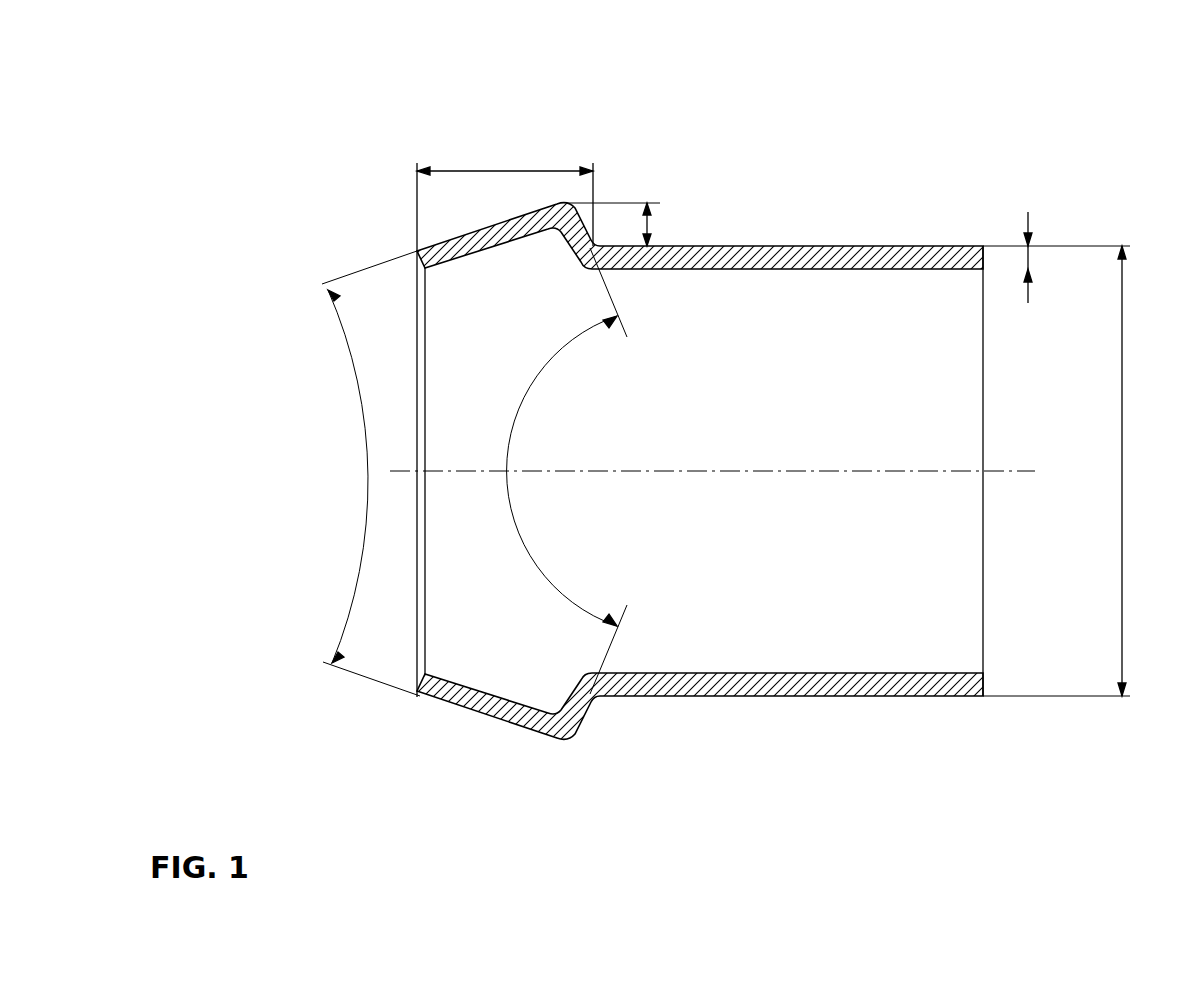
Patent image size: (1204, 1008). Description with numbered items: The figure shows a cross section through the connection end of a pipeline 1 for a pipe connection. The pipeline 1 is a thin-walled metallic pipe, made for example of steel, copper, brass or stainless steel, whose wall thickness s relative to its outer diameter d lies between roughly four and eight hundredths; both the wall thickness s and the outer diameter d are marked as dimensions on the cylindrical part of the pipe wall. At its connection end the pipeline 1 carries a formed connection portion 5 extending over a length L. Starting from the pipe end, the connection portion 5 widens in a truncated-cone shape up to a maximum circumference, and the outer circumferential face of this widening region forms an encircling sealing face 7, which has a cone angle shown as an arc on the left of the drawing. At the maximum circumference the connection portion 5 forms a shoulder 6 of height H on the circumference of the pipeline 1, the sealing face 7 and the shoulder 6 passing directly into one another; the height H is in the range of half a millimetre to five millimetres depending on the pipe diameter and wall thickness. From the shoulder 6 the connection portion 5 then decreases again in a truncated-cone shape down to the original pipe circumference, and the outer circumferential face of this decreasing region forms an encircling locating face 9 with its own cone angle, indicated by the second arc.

The pipeline 1 is at (772, 156).
The connection portion 5 is at (500, 744).
The shoulder 6 is at (573, 746).
The sealing face 7 is at (467, 716).
The locating face 9 is at (597, 717).
The length L is at (498, 172).
The height H is at (653, 226).
The outer diameter d is at (1125, 470).
The wall thickness s is at (1030, 251).